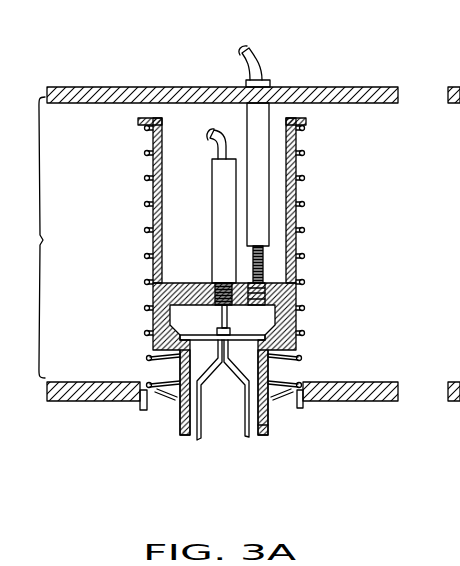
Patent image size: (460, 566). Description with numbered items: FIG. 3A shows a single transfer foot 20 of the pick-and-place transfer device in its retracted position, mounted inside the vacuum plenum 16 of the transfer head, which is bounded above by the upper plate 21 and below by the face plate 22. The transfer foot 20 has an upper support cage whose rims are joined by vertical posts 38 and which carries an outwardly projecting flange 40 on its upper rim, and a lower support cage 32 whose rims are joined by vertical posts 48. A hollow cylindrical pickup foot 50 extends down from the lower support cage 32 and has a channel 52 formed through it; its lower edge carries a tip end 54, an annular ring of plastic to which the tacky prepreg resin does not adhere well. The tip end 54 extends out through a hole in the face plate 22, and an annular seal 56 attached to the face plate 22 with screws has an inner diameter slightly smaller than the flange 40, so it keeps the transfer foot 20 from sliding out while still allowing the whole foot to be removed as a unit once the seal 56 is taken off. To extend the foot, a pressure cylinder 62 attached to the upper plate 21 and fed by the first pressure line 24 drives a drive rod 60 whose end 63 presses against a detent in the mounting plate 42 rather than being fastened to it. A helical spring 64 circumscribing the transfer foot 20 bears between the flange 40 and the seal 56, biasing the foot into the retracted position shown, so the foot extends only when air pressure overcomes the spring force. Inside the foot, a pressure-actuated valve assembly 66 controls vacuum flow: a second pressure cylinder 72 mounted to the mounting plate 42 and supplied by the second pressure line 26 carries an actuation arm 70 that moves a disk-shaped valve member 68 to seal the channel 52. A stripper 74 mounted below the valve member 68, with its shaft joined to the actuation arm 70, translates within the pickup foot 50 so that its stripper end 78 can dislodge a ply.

The vacuum plenum 16 is at (26, 237).
The transfer foot 20 is at (318, 226).
The upper plate 21 is at (108, 87).
The face plate 22 is at (389, 402).
The first pressure line 24 is at (266, 52).
The second pressure line 26 is at (212, 158).
The lower support cage 32 is at (153, 322).
The vertical posts 38 is at (300, 190).
The outwardly projecting flange 40 is at (306, 122).
The mounting plate 42 is at (153, 268).
The vertical posts 48 is at (296, 325).
The pickup foot 50 is at (152, 410).
The channel 52 is at (190, 437).
The tip end 54 is at (285, 438).
The seal 56 is at (282, 400).
The drive rod 60 is at (265, 272).
The pressure cylinder 62 is at (257, 132).
The end 63 is at (266, 298).
The spring 64 is at (148, 178).
The valve assembly 66 is at (208, 190).
The valve member 68 is at (286, 372).
The actuation arm 70 is at (222, 326).
The second pressure cylinder 72 is at (222, 264).
The stripper 74 is at (223, 437).
The stripper end 78 is at (255, 440).